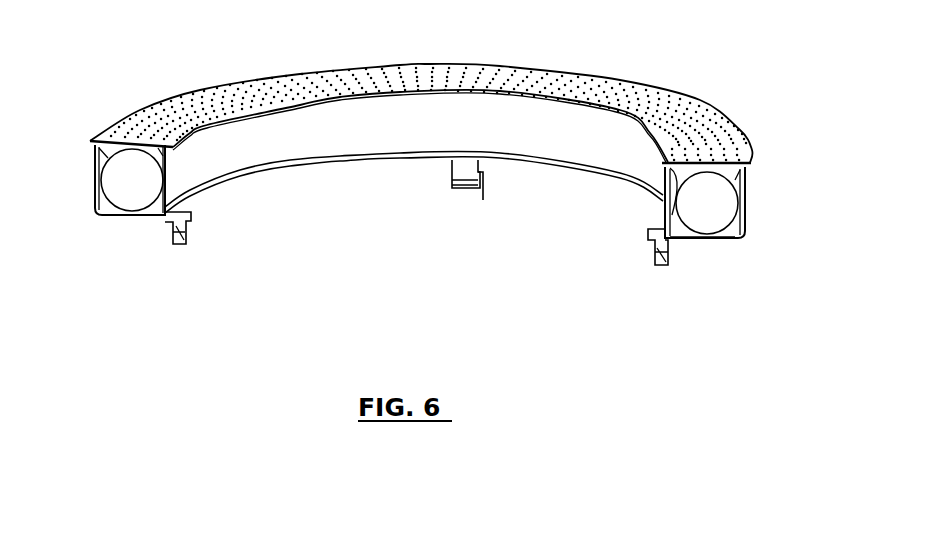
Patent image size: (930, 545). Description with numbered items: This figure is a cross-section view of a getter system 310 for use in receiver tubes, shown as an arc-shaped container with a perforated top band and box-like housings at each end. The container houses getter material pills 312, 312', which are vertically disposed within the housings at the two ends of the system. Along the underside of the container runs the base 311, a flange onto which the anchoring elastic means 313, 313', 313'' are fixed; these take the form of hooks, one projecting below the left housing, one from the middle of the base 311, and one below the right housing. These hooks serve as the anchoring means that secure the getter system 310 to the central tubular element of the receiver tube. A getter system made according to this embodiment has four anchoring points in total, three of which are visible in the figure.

The getter system 310 is at (745, 76).
The base 311 is at (308, 165).
The getter material pill 312 is at (96, 205).
The getter material pill 312' is at (732, 241).
The anchoring elastic means 313 is at (203, 261).
The anchoring elastic means 313' is at (455, 219).
The anchoring elastic means 313'' is at (623, 272).